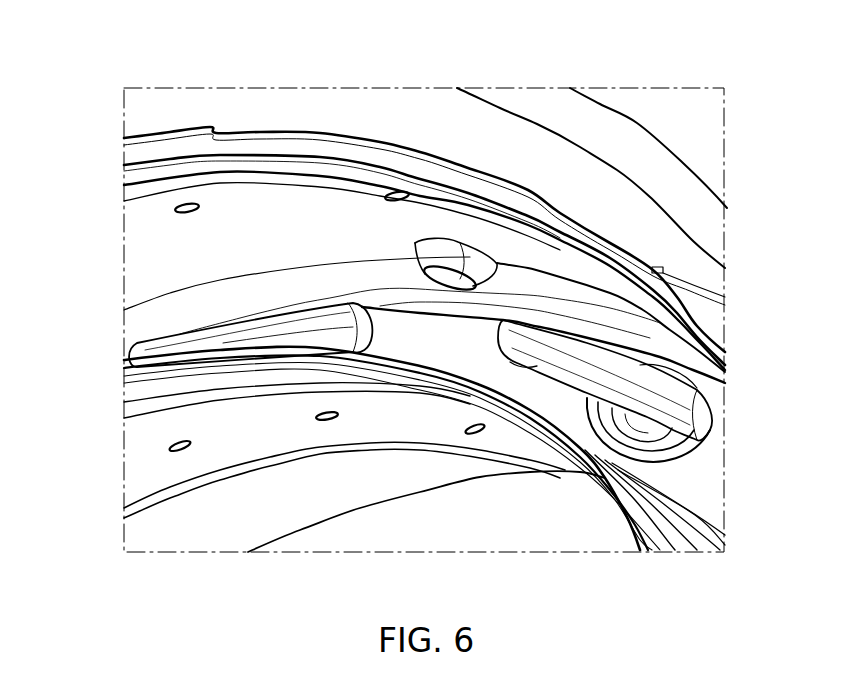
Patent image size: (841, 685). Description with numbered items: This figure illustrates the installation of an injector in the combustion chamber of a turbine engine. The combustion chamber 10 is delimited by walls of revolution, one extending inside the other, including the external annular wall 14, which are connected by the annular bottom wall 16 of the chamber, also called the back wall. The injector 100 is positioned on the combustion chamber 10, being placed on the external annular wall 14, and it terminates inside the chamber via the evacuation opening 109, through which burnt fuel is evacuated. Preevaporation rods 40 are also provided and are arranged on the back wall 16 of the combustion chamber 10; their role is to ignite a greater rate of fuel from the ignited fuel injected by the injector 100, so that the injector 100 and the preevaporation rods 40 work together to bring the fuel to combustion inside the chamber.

The combustion chamber 10 is at (157, 270).
The external annular wall 14 is at (637, 323).
The annular bottom wall 16 is at (702, 505).
The preevaporation rod 40 is at (663, 400).
The injector 100 is at (605, 162).
The evacuation opening 109 is at (463, 261).